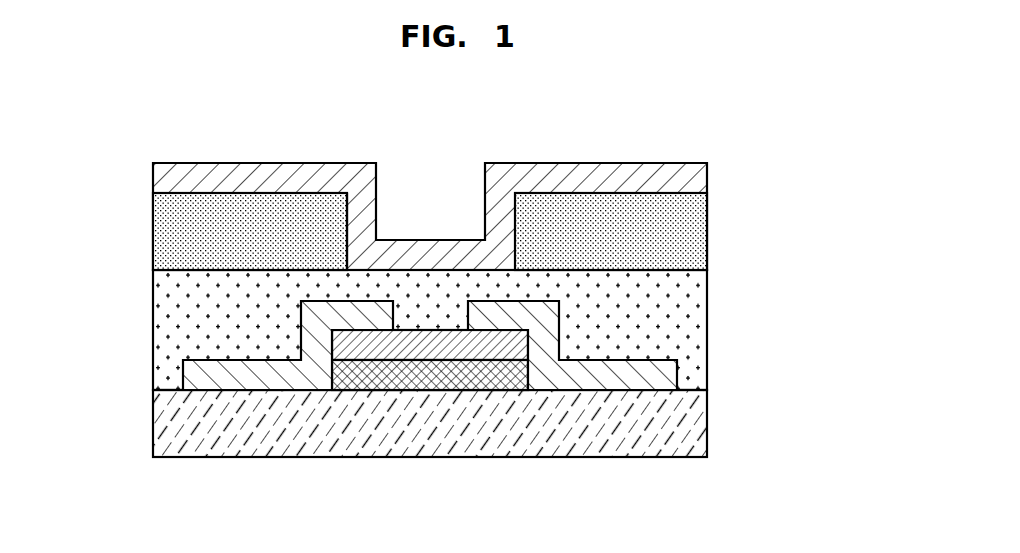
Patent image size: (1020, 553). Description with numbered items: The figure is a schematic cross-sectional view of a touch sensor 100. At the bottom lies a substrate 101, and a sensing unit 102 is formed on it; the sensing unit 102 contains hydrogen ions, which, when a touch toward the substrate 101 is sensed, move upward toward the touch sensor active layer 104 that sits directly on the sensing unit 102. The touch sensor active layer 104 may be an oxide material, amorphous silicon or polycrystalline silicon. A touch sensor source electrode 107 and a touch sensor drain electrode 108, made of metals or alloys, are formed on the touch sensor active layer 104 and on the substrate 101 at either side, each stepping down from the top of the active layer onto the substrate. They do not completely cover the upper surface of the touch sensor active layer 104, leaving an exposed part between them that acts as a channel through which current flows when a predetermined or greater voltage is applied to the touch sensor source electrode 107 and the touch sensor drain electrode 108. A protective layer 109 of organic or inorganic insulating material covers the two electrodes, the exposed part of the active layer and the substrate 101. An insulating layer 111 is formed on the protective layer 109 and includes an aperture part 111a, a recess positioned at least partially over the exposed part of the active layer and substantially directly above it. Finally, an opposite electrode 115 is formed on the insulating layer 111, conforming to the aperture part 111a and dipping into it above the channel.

The touch sensor 100 is at (638, 120).
The substrate 101 is at (695, 430).
The sensing unit 102 is at (477, 380).
The touch sensor active layer 104 is at (402, 352).
The touch sensor source electrode 107 is at (197, 381).
The touch sensor drain electrode 108 is at (660, 379).
The protective layer 109 is at (693, 305).
The insulating layer 111 is at (170, 230).
The aperture part 111a is at (348, 222).
The opposite electrode 115 is at (695, 181).